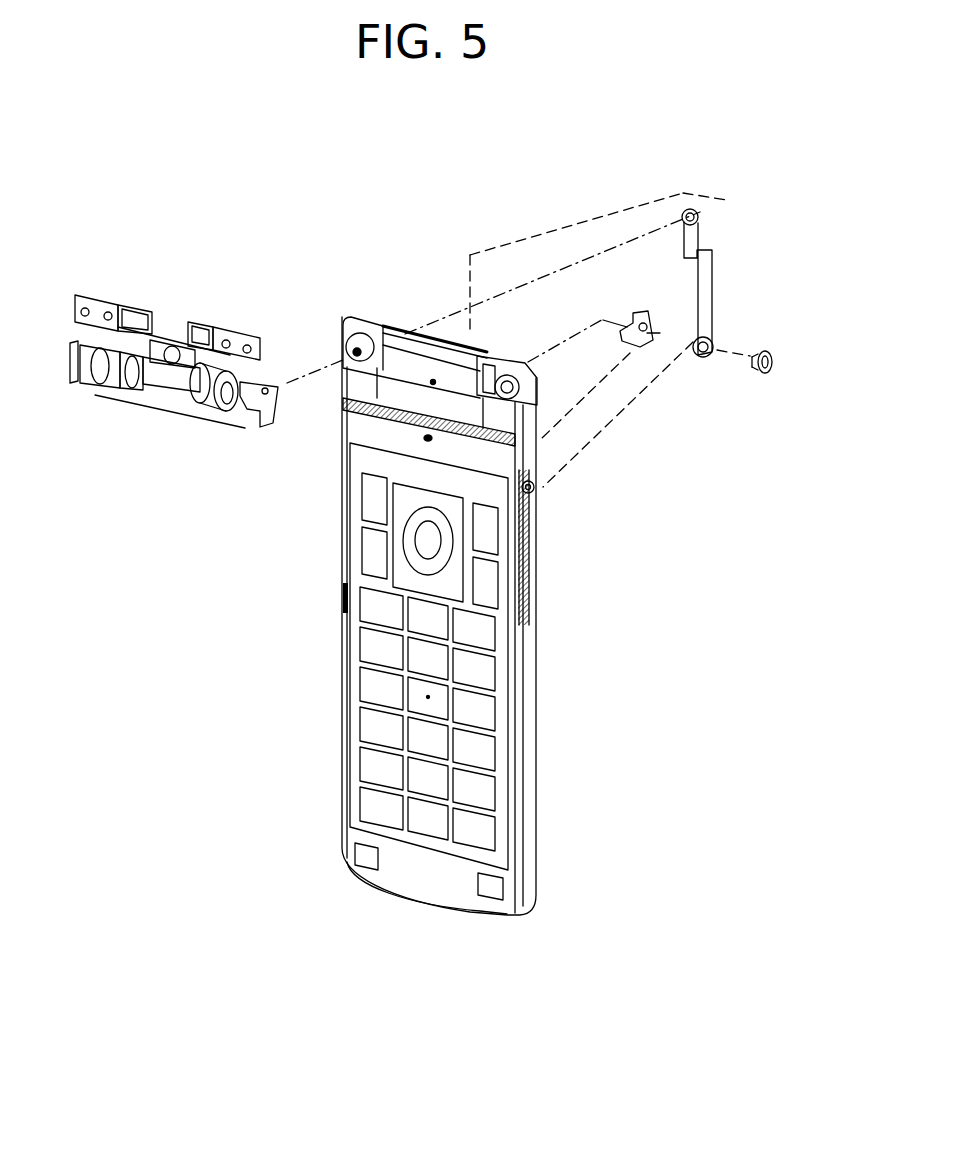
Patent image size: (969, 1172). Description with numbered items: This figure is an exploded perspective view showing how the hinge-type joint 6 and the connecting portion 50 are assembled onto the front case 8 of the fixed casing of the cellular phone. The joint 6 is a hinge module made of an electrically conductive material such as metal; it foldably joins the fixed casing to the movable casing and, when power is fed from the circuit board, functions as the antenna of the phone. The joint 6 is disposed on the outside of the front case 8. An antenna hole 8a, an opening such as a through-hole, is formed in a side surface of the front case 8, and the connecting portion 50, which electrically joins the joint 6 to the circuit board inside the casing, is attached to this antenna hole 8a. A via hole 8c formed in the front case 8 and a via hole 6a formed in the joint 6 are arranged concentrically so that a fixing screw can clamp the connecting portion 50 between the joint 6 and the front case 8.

The joint 6 is at (157, 345).
The via hole 6a is at (262, 384).
The front case 8 is at (357, 432).
The antenna hole 8a is at (537, 493).
The via hole 8c is at (503, 365).
The connecting portion 50 is at (713, 277).